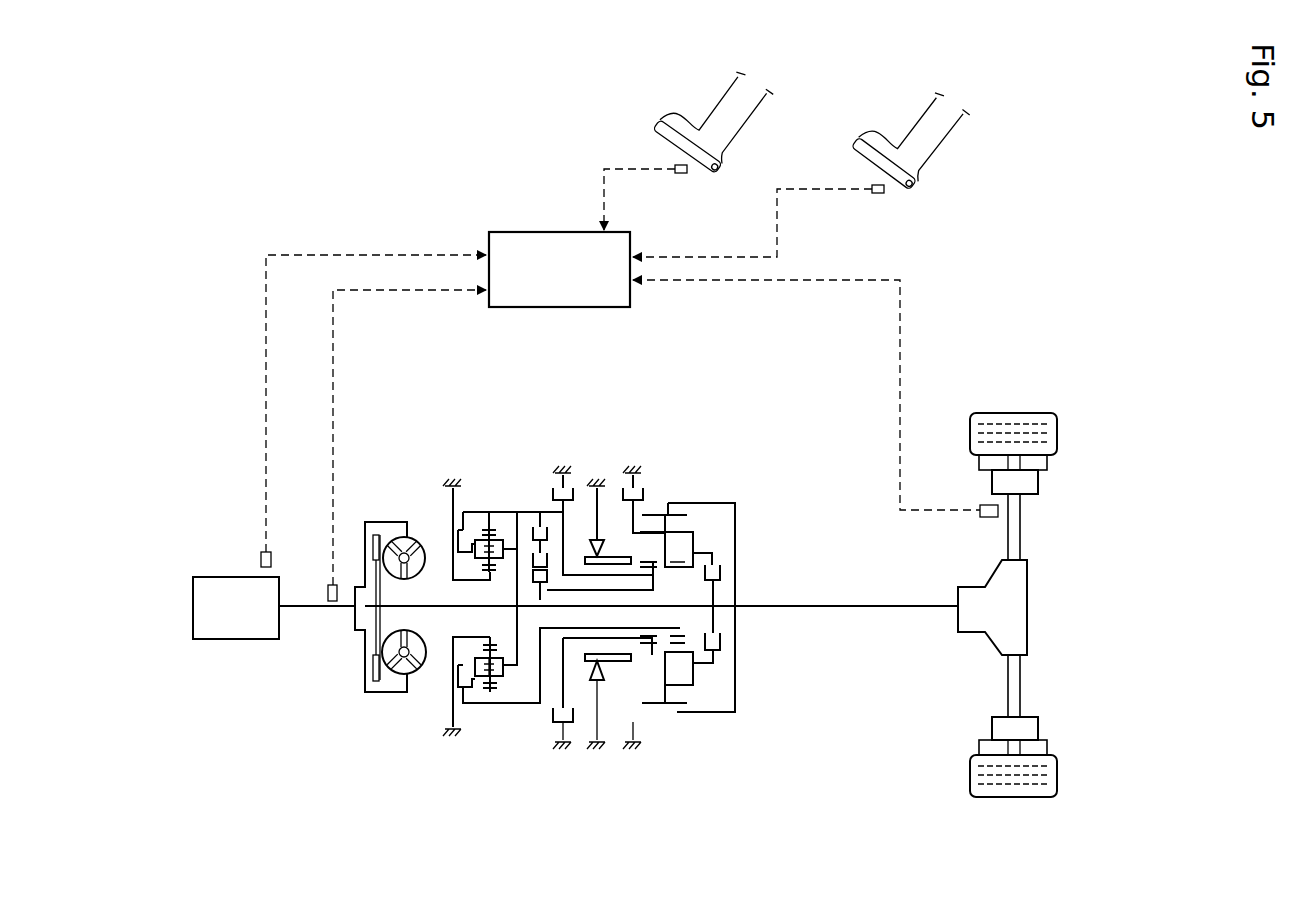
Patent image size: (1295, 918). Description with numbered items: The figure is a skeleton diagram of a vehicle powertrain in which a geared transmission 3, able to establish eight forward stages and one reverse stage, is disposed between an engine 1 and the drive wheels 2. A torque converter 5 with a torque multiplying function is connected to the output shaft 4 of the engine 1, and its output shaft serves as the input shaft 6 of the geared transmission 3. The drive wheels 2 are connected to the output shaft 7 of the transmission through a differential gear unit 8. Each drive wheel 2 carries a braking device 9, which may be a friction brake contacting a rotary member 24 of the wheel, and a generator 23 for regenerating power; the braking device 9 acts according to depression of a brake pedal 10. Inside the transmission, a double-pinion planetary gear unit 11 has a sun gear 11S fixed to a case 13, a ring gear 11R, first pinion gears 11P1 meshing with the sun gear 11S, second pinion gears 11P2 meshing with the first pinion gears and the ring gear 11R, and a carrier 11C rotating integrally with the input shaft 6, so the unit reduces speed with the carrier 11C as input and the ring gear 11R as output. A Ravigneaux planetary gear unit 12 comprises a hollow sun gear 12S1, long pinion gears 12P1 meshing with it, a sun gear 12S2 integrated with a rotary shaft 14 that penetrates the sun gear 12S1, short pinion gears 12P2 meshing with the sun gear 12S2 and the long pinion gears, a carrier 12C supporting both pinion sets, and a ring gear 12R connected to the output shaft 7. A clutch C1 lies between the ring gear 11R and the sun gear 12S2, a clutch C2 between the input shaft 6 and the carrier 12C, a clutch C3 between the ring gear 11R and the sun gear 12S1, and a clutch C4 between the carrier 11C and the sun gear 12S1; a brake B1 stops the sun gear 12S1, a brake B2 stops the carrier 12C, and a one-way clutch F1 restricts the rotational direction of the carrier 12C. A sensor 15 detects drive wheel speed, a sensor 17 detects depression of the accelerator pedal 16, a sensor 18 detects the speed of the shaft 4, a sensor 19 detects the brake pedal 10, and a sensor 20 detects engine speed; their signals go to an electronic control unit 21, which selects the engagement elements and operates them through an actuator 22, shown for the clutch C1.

The engine 1 is at (193, 608).
The drive wheels 2 is at (1012, 413).
The geared transmission 3 is at (545, 800).
The output shaft of the engine 4 is at (305, 605).
The torque converter 5 is at (378, 503).
The input shaft 6 is at (432, 618).
The output shaft of the geared transmission 7 is at (835, 605).
The differential gear unit 8 is at (1027, 605).
The braking device 9 is at (1038, 480).
The brake pedal 10 is at (855, 141).
The double-pinion planetary gear unit 11 is at (486, 708).
The Ravigneaux planetary gear unit 12 is at (685, 720).
The case 13 is at (453, 738).
The rotary shaft 14 is at (600, 596).
The sensor 15 is at (990, 517).
The accelerator pedal 16 is at (660, 124).
The sensor 17 is at (681, 173).
The sensor 18 is at (333, 603).
The sensor 19 is at (878, 193).
The sensor 20 is at (261, 558).
The electronic control unit 21 is at (538, 232).
The actuator 22 is at (540, 582).
The generator 23 is at (1021, 463).
The rotary member 24 is at (981, 470).
The first pinion gears 11P1 is at (475, 553).
The second pinion gears 11P2 is at (503, 668).
The ring gear 11R is at (489, 528).
The sun gear 11S is at (492, 640).
The carrier 11C is at (517, 535).
The ring gear 12R is at (655, 505).
The long pinion gears 12P1 is at (668, 706).
The short pinion gears 12P2 is at (672, 560).
The sun gear 12S1 is at (652, 656).
The sun gear 12S2 is at (693, 645).
The carrier 12C is at (693, 680).
The clutch C1 is at (548, 560).
The clutch C2 is at (720, 573).
The clutch C3 is at (545, 528).
The clutch C4 is at (458, 536).
The brake B1 is at (565, 487).
The brake B2 is at (634, 487).
The one-way clutch F1 is at (600, 543).